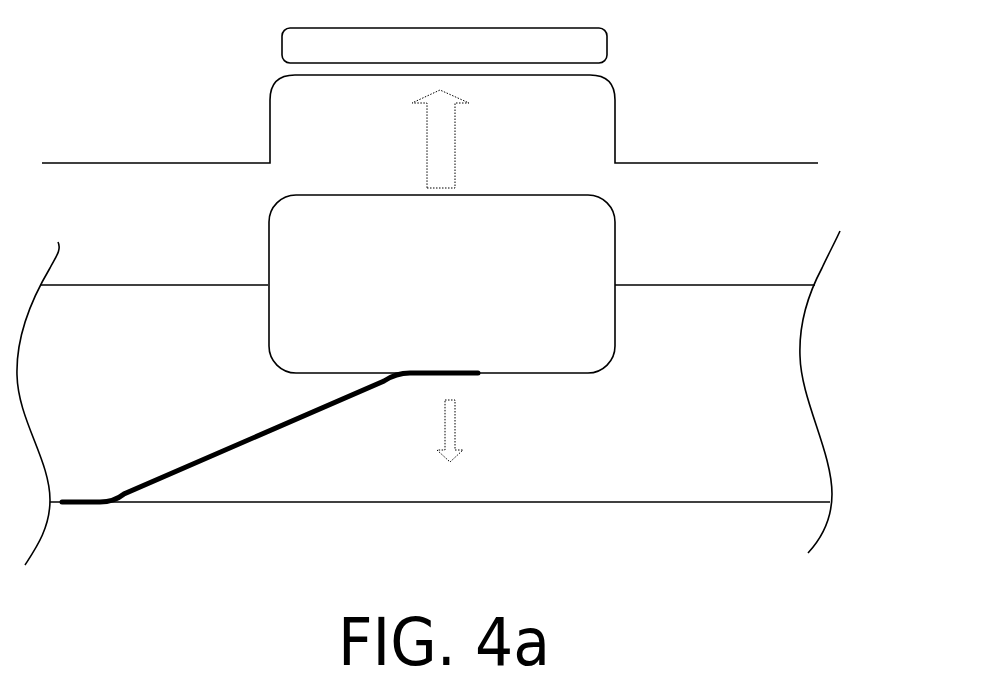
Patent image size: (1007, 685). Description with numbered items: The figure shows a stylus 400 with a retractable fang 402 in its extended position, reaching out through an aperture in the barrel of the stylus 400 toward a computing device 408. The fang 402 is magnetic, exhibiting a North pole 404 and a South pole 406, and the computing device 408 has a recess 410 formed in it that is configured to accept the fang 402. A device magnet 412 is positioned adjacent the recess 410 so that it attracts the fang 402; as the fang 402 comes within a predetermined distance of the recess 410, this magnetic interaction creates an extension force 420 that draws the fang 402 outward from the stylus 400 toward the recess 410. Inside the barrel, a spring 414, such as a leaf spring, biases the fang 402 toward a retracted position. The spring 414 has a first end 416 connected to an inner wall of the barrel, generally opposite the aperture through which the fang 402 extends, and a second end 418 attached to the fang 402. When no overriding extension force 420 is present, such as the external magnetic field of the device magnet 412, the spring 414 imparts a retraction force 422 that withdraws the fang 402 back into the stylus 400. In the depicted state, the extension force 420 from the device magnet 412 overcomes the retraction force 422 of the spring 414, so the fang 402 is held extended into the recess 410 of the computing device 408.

The stylus 400 is at (790, 229).
The fang 402 is at (258, 256).
The North pole 404 is at (453, 220).
The South pole 406 is at (457, 342).
The computing device 408 is at (177, 130).
The recess 410 is at (368, 77).
The device magnet 412 is at (588, 43).
The spring 414 is at (288, 427).
The first end 416 is at (95, 503).
The second end 418 is at (435, 375).
The extension force 420 is at (455, 142).
The retraction force 422 is at (458, 440).